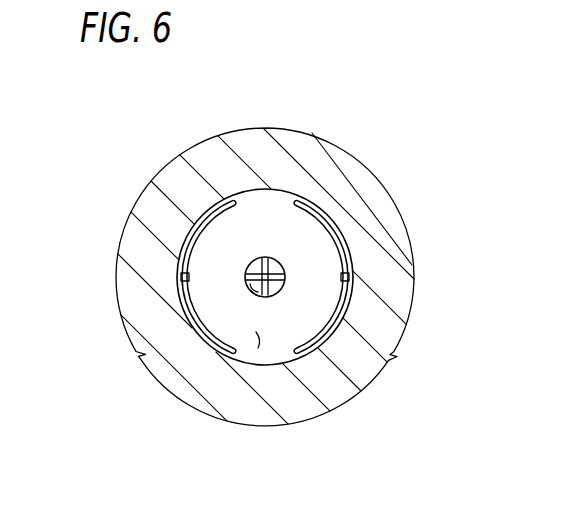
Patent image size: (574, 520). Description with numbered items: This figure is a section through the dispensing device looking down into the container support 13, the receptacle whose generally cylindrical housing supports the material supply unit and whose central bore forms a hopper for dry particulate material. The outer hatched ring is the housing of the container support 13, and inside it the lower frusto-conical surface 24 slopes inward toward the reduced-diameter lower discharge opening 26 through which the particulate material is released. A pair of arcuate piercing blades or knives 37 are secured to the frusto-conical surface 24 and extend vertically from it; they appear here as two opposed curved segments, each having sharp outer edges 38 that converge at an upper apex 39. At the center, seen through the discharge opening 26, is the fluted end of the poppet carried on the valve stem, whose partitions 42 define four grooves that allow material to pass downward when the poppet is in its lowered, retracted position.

The container support 13 is at (352, 170).
The lower frusto-conical surface 24 is at (256, 332).
The lower discharge opening 26 is at (255, 293).
The arcuate piercing blades 37 is at (333, 225).
The sharp outer edges 38 is at (178, 259).
The upper apex 39 is at (187, 278).
The partitions 42 is at (268, 258).